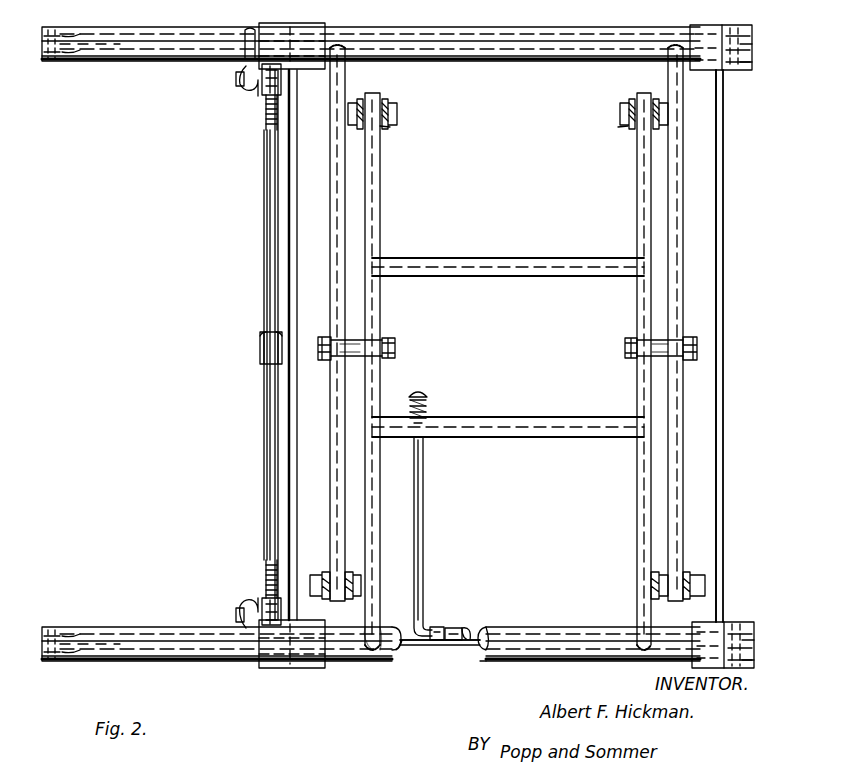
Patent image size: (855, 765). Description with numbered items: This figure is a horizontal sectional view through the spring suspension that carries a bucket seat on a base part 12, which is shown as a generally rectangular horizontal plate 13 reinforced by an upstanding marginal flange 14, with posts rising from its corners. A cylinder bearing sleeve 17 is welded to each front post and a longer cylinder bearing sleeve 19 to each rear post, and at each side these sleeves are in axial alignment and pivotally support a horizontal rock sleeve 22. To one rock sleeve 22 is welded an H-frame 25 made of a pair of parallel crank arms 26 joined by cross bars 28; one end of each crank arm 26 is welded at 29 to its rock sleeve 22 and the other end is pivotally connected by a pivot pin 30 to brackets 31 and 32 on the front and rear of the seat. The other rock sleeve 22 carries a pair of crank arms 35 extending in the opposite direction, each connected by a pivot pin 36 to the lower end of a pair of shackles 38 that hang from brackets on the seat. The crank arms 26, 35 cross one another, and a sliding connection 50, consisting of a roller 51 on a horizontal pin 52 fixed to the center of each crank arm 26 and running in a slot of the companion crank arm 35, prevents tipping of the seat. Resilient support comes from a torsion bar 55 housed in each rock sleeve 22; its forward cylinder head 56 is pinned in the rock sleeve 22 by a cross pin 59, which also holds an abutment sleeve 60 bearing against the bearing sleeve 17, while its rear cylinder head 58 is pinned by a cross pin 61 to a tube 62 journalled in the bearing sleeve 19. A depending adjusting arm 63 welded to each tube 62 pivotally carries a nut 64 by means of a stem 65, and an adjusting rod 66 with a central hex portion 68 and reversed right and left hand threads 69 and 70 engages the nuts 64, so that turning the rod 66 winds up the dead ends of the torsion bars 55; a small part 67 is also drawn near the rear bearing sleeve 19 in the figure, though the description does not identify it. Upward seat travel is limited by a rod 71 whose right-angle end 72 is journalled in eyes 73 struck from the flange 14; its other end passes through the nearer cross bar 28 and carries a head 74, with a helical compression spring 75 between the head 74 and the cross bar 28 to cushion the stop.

The base part 12 is at (730, 286).
The horizontal plate 13 is at (506, 184).
The marginal flange 14 is at (290, 250).
The cylinder bearing sleeve 17 is at (712, 30).
The cylinder bearing sleeve 19 is at (316, 70).
The rock sleeve 22 is at (625, 38).
The H-frame 25 is at (552, 247).
The crank arm 26 is at (382, 204).
The cross bar 28 is at (510, 276).
The weld 29 is at (380, 626).
The pivot pin 30 is at (398, 110).
The bracket 31 is at (620, 126).
The bracket 32 is at (390, 128).
The crank arm 35 is at (332, 205).
The pivot pin 36 is at (362, 582).
The shackle 38 is at (318, 574).
The sliding connection 50 is at (396, 335).
The roller 51 is at (322, 338).
The horizontal pin 52 is at (396, 348).
The torsion bar 55 is at (406, 652).
The cylinder head 56 is at (740, 28).
The cylinder head 58 is at (66, 54).
The cross pin 59 is at (753, 44).
The abutment sleeve 60 is at (752, 64).
The cross pin 61 is at (66, 28).
The tube 62 is at (144, 35).
The adjusting arm 63 is at (252, 96).
The nut 64 is at (283, 96).
The stem 65 is at (236, 80).
The adjusting rod 66 is at (250, 226).
The lug 67 is at (251, 29).
The hex portion 68 is at (260, 347).
The right hand thread 69 is at (266, 128).
The left hand thread 70 is at (266, 558).
The rod 71 is at (434, 496).
The end 72 is at (446, 6).
The eye 73 is at (436, 626).
The head 74 is at (422, 392).
The helical compression spring 75 is at (426, 410).